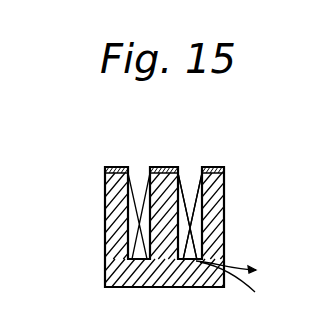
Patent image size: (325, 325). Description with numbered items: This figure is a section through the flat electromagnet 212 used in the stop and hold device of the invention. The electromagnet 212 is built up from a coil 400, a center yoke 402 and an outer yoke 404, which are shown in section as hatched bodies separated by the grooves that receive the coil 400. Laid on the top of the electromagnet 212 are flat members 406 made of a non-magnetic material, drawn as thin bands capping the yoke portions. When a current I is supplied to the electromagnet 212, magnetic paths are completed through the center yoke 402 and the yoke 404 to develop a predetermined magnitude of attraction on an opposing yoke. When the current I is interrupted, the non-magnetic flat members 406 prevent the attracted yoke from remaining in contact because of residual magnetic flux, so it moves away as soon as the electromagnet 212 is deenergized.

The flat electromagnet 212 is at (98, 253).
The coil 400 is at (192, 172).
The center yoke 402 is at (172, 193).
The yoke 404 is at (223, 213).
The flat members 406 is at (160, 165).
The current I is at (234, 276).